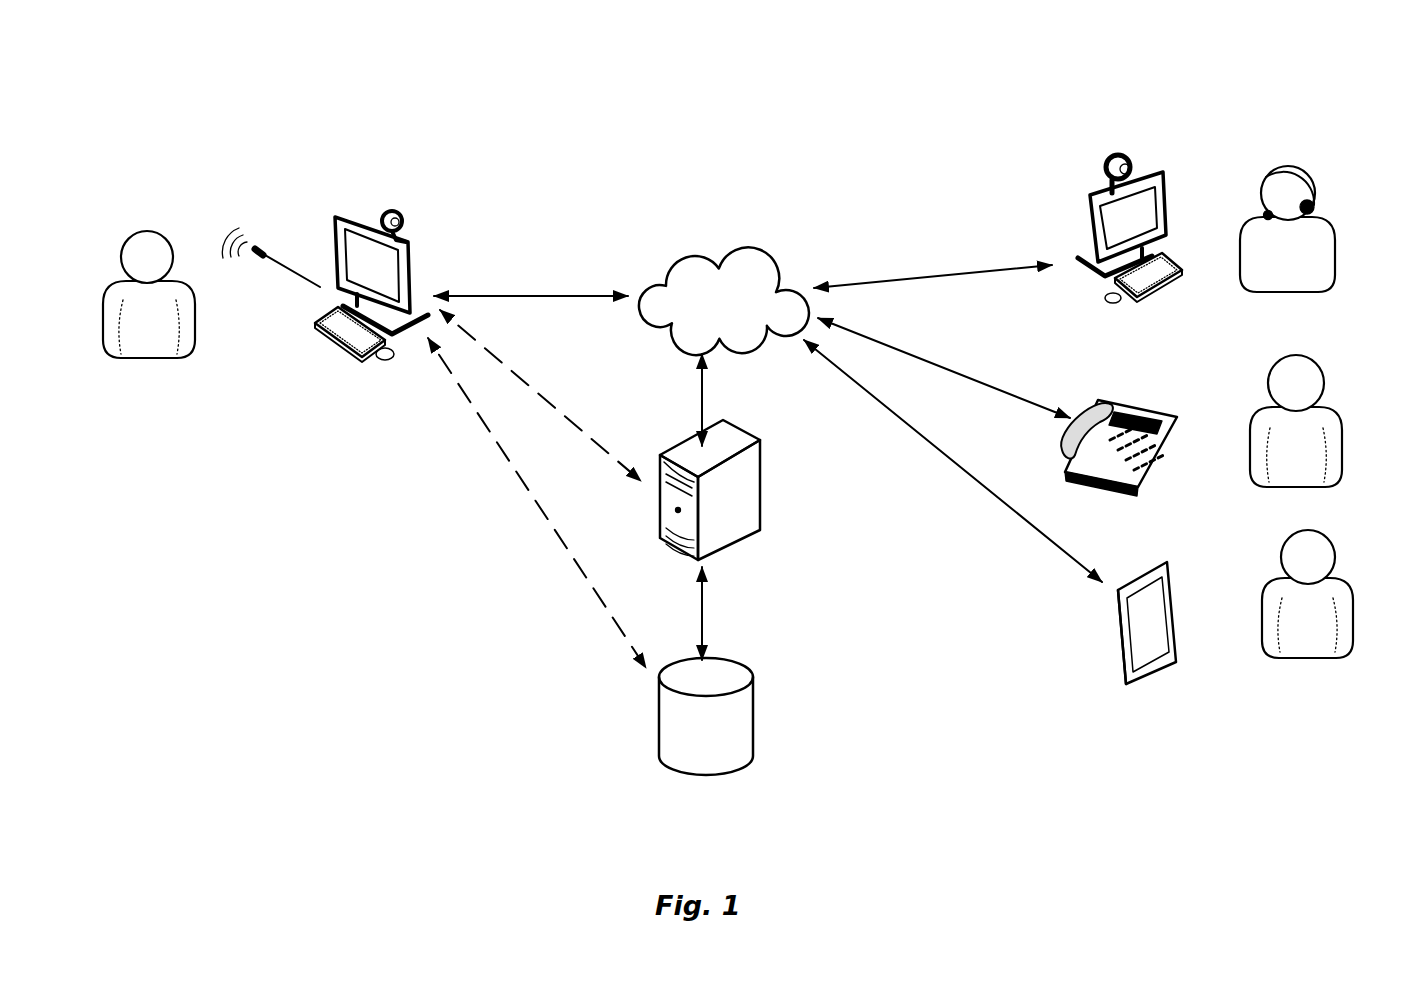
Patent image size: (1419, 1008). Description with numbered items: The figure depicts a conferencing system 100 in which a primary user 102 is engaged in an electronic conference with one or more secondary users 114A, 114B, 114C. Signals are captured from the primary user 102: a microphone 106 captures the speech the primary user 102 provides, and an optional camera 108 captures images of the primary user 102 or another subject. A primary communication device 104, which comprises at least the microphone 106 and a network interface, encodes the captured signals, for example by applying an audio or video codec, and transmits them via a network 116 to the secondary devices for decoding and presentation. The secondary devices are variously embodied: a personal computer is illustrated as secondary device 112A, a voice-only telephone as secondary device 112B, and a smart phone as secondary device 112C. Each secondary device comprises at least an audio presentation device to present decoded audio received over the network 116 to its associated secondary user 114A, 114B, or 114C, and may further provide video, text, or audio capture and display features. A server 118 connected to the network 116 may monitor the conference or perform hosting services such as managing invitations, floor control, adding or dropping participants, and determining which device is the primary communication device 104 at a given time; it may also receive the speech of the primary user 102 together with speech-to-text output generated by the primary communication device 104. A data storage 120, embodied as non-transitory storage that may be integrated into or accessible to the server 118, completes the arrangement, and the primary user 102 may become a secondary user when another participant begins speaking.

The system 100 is at (1150, 48).
The primary user 102 is at (168, 238).
The primary communication device 104 is at (463, 212).
The microphone 106 is at (289, 277).
The camera 108 is at (393, 207).
The secondary device 112A is at (1170, 194).
The secondary device 112B is at (1158, 406).
The secondary device 112C is at (1172, 570).
The secondary user 114A is at (1303, 174).
The secondary user 114B is at (1318, 364).
The secondary user 114C is at (1334, 548).
The network 116 is at (752, 259).
The server 118 is at (752, 490).
The data storage 120 is at (746, 718).